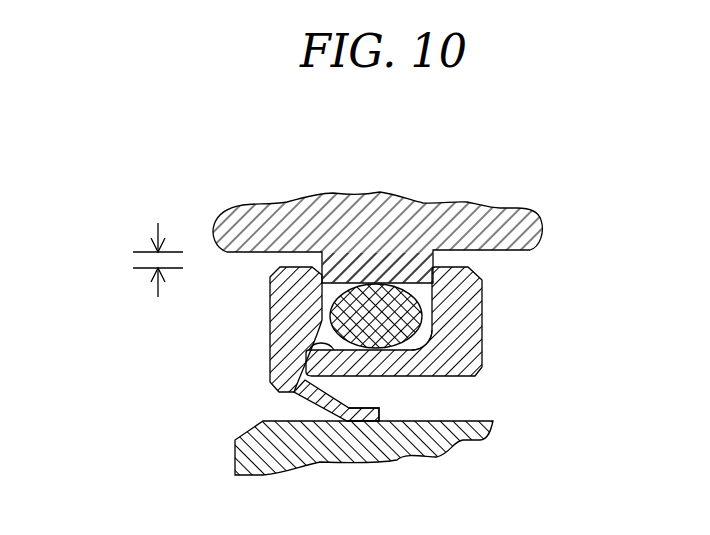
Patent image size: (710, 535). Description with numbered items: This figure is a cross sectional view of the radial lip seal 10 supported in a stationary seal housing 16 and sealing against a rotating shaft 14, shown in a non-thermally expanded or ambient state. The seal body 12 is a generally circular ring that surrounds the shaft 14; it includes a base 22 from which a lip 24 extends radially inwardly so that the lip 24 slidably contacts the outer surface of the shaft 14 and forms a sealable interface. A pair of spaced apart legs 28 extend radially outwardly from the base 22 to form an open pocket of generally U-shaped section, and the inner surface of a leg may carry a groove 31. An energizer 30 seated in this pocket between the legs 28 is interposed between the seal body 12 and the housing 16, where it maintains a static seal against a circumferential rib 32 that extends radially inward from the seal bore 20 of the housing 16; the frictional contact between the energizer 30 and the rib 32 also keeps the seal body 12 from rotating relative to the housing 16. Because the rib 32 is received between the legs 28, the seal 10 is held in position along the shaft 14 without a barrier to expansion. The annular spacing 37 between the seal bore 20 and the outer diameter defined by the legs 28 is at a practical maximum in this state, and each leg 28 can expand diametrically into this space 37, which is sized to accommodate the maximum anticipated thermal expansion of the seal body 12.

The radial lip seal 10 is at (583, 247).
The seal body 12 is at (376, 346).
The shaft 14 is at (440, 455).
The seal housing 16 is at (410, 211).
The seal bore 20 is at (457, 254).
The base 22 is at (294, 392).
The lip 24 is at (380, 408).
The legs 28 is at (270, 313).
The energizer 30 is at (443, 348).
The groove 31 is at (197, 377).
The circumferential rib 32 is at (340, 283).
The annular spacing 37 is at (142, 262).